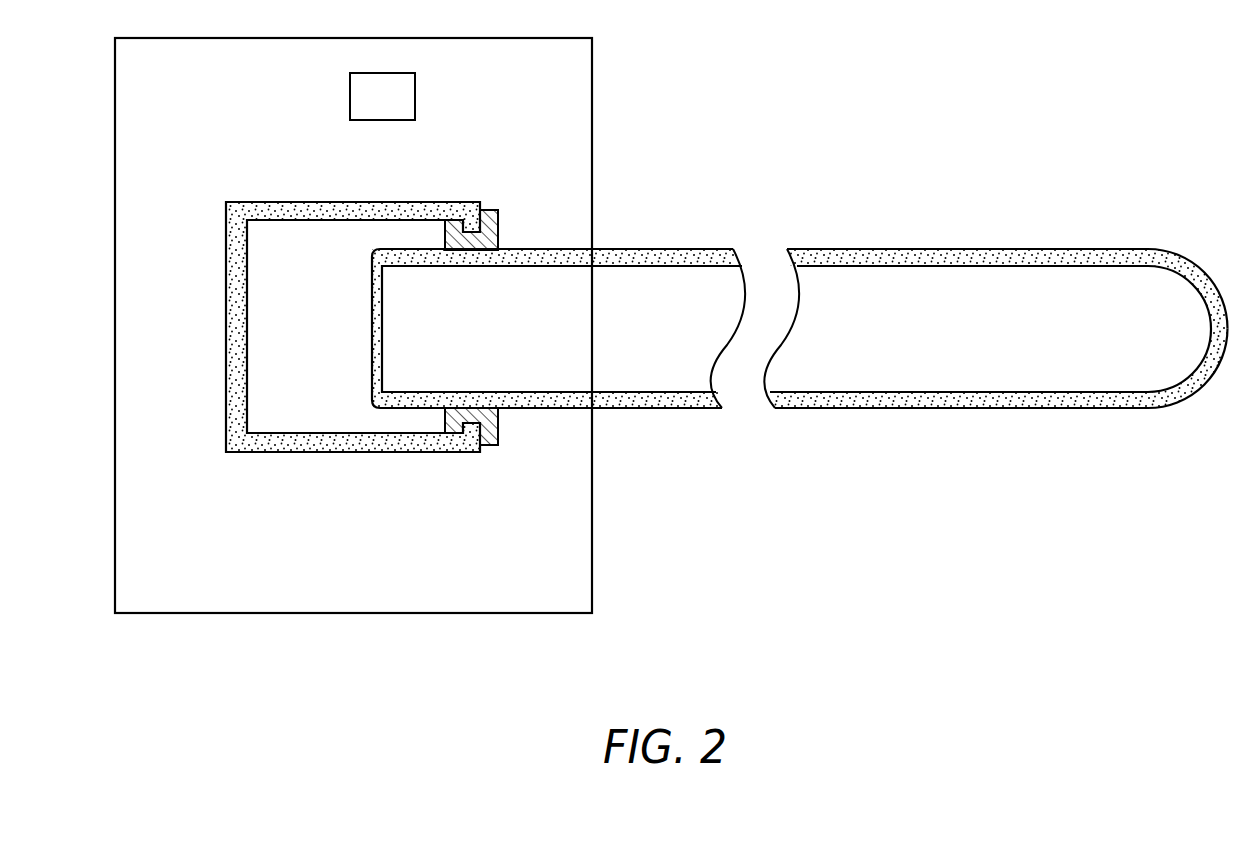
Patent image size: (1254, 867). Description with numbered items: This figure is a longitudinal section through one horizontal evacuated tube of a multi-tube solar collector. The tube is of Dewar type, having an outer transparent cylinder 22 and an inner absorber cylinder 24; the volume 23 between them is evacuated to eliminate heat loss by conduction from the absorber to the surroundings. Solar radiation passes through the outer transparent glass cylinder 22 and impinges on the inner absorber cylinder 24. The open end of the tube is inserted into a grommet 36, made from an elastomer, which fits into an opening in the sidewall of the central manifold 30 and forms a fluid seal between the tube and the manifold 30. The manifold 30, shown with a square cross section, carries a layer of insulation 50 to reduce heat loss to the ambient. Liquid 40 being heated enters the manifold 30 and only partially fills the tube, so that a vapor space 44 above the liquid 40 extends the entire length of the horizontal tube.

The central manifold 30 is at (545, 73).
The layer of insulation 50 is at (364, 103).
The liquid 40 is at (319, 395).
The grommet 36 is at (503, 243).
The outer transparent cylinder 22 is at (800, 336).
The inner absorber cylinder 24 is at (966, 266).
The volume 23 is at (1093, 402).
The vapor space 44 is at (1118, 293).